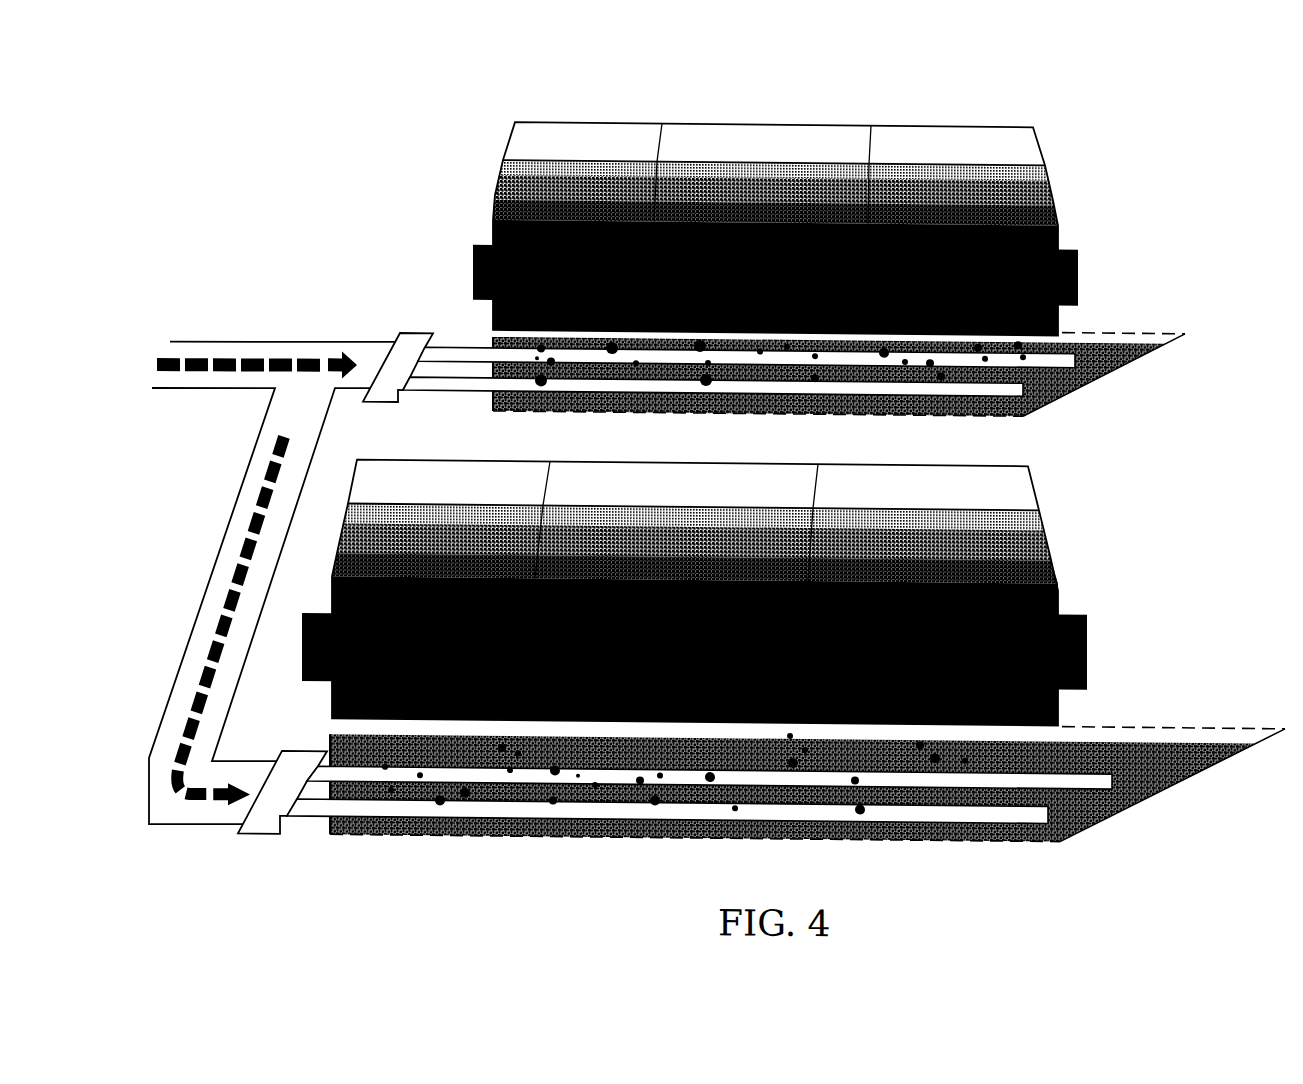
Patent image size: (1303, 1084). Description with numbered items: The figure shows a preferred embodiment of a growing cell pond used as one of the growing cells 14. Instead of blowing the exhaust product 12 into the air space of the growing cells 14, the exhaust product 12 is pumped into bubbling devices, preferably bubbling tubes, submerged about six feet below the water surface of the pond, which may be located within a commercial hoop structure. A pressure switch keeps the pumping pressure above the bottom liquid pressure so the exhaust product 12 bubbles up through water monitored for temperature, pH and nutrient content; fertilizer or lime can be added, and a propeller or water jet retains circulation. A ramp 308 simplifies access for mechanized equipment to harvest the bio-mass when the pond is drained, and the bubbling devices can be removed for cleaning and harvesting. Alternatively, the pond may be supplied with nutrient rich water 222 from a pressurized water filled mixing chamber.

The exhaust product 12 is at (291, 556).
The nutrient rich water 222 is at (241, 335).
The growing cells 14 is at (811, 255).
The ramp 308 is at (1236, 708).